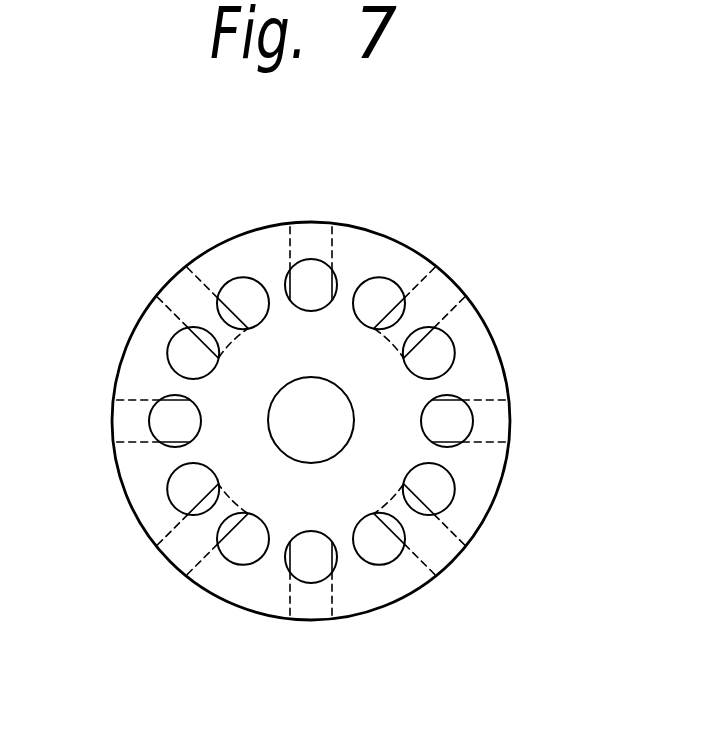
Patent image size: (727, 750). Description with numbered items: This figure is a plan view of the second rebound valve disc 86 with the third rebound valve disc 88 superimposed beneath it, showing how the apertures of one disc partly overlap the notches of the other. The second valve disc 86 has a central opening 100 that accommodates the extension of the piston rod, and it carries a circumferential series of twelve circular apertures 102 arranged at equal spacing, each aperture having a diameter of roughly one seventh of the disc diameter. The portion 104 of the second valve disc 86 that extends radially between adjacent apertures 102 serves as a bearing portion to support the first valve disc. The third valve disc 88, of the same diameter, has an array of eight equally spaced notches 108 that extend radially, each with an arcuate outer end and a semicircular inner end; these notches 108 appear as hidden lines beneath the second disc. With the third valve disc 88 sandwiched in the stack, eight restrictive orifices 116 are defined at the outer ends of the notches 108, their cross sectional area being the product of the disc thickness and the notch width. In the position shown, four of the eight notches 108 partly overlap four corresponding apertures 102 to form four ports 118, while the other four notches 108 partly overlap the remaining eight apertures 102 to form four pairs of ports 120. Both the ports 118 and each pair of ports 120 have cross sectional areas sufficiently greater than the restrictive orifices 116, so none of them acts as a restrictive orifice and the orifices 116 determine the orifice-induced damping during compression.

The second rebound valve disc 86 is at (405, 260).
The third rebound valve disc 88 is at (475, 347).
The central opening 100 is at (305, 460).
The circular apertures 102 is at (380, 286).
The portion 104 is at (347, 280).
The notches 108 is at (512, 457).
The restrictive orifices 116 is at (455, 276).
The ports 118 is at (302, 282).
The pairs of ports 120 is at (190, 340).